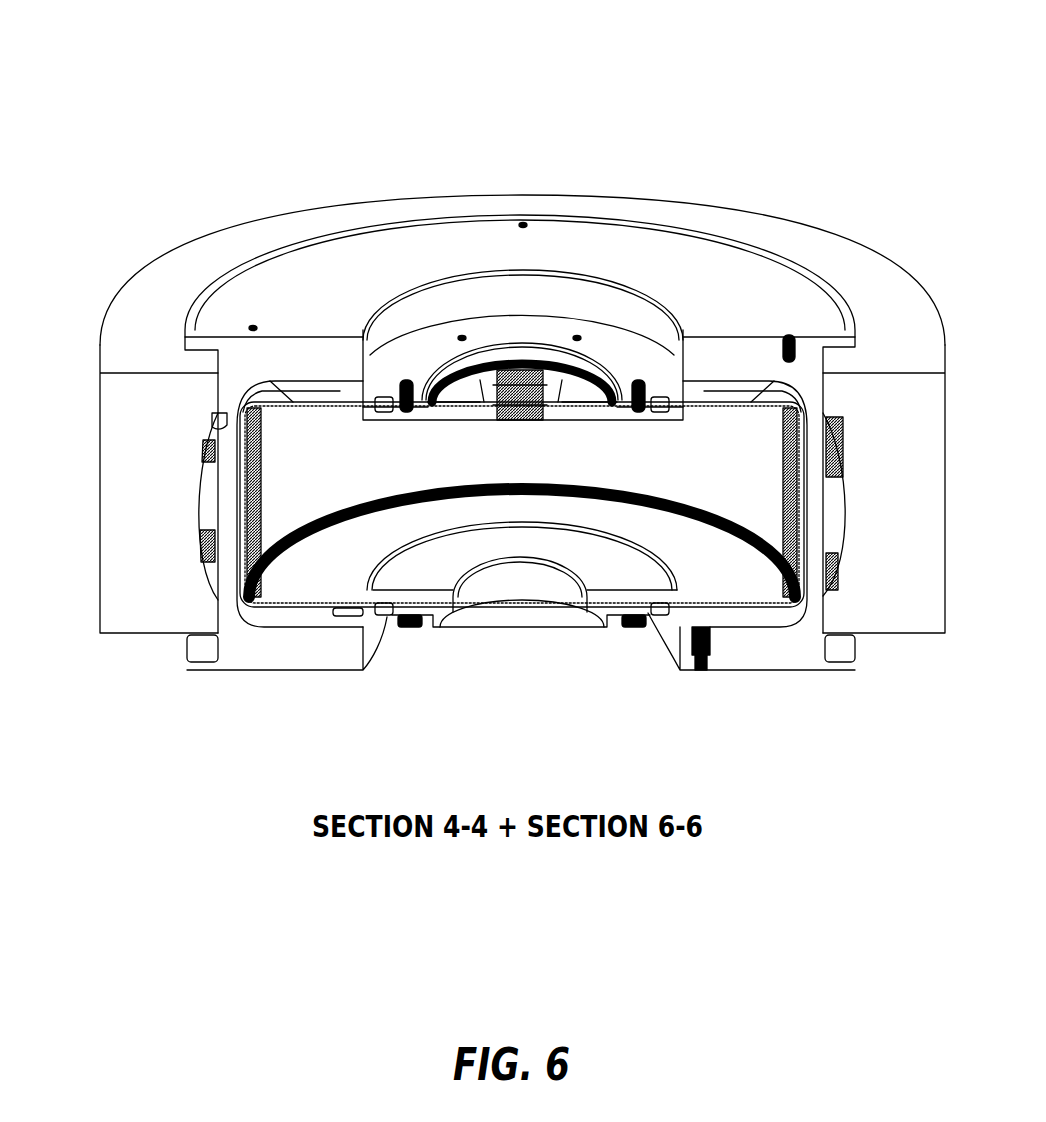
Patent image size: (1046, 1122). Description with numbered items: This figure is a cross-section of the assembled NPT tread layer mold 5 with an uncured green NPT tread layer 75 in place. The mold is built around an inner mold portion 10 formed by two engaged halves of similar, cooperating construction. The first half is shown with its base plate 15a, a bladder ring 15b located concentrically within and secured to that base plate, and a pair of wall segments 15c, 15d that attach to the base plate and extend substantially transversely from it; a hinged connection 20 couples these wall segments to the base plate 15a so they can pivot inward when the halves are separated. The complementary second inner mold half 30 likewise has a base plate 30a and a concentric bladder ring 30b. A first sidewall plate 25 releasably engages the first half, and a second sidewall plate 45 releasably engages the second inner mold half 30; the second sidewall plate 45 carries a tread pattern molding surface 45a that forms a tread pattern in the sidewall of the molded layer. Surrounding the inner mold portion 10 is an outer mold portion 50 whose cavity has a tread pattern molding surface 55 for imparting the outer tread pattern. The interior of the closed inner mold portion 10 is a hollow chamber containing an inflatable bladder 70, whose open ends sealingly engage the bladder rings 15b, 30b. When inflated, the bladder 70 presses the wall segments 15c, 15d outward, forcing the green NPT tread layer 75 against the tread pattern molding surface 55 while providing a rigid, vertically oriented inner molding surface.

The NPT tread layer mold 5 is at (252, 83).
The inner mold portion 10 is at (240, 640).
The base plate 15a is at (365, 618).
The bladder ring 15b is at (623, 608).
The wall segment 15c is at (800, 393).
The wall segment 15d is at (253, 390).
The hinged connection 20 is at (340, 616).
The first sidewall plate 25 is at (765, 657).
The second inner mold half 30 is at (487, 365).
The base plate 30a is at (352, 390).
The bladder ring 30b is at (589, 410).
The second sidewall plate 45 is at (600, 213).
The tread pattern molding surface 45a is at (215, 430).
The outer mold portion 50 is at (838, 238).
The tread pattern molding surface 55 is at (205, 527).
The inflatable bladder 70 is at (303, 607).
The green NPT tread layer 75 is at (822, 522).